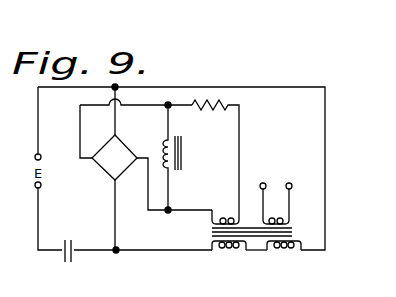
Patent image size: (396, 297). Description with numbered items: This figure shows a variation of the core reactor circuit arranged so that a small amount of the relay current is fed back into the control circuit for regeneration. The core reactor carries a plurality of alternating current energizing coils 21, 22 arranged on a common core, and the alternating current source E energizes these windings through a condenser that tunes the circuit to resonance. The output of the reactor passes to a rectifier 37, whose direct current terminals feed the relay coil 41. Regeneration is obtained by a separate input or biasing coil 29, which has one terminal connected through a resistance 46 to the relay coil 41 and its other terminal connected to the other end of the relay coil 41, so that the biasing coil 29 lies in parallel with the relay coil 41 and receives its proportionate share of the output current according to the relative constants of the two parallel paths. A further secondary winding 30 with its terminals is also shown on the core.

The alternating current energizing coil 21 is at (281, 256).
The alternating current energizing coil 22 is at (230, 256).
The biasing coil 29 is at (226, 201).
The transformer secondary winding with terminals 30 is at (276, 214).
The rectifier 37 is at (103, 170).
The relay coil 41 is at (166, 144).
The resistance 46 is at (205, 103).